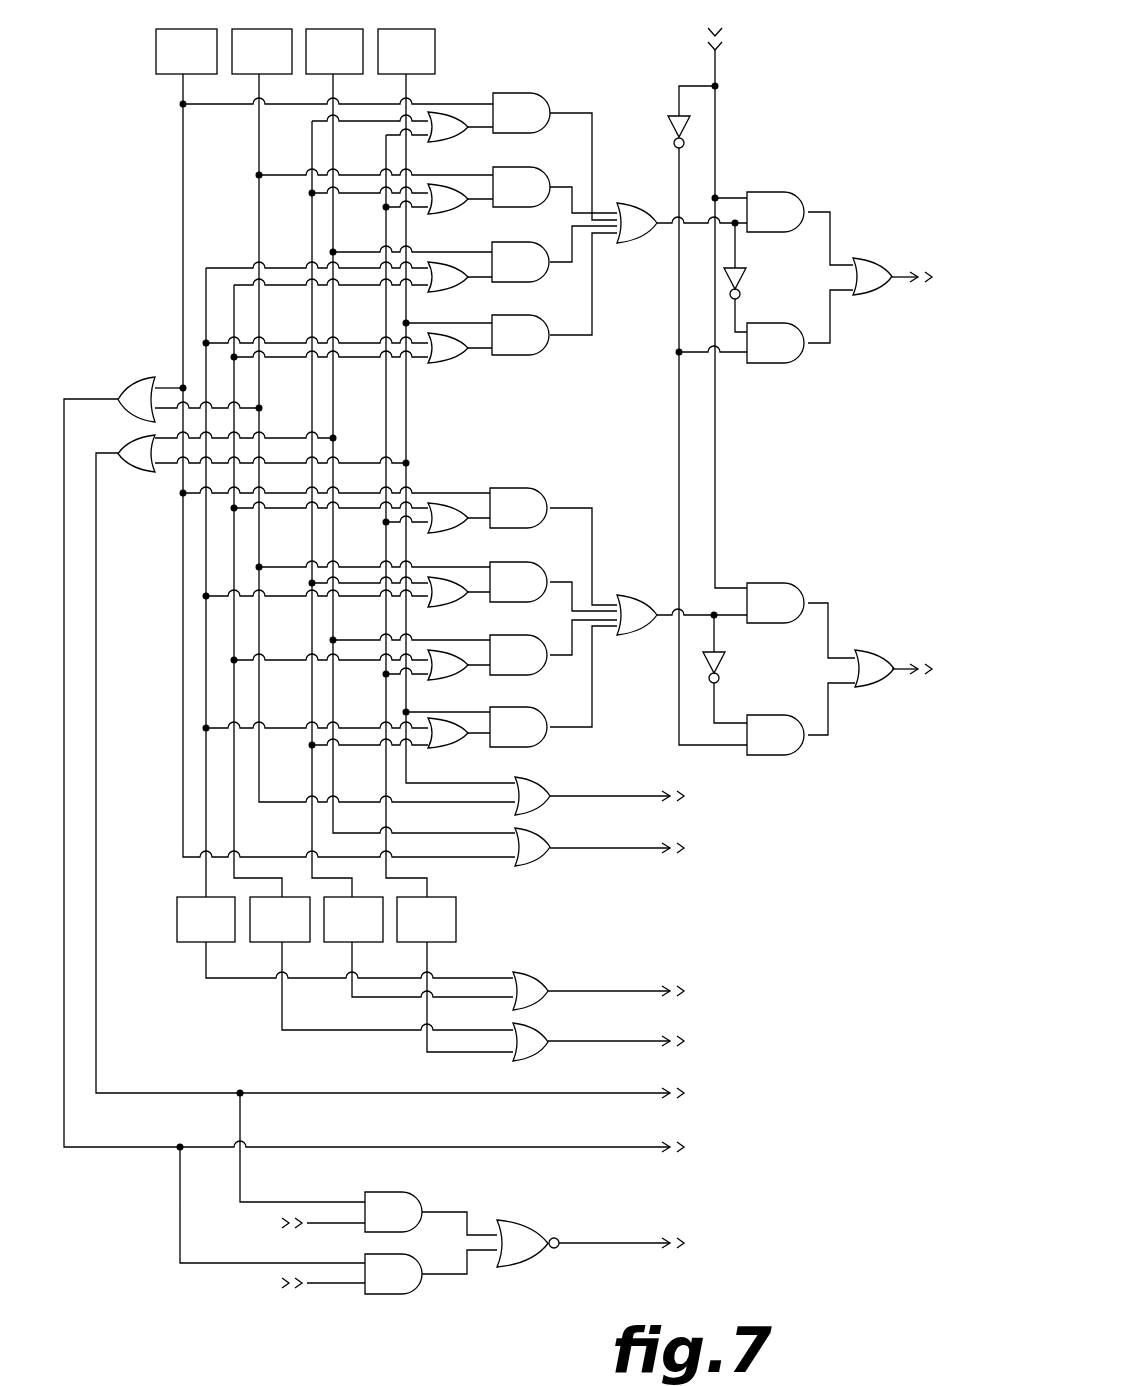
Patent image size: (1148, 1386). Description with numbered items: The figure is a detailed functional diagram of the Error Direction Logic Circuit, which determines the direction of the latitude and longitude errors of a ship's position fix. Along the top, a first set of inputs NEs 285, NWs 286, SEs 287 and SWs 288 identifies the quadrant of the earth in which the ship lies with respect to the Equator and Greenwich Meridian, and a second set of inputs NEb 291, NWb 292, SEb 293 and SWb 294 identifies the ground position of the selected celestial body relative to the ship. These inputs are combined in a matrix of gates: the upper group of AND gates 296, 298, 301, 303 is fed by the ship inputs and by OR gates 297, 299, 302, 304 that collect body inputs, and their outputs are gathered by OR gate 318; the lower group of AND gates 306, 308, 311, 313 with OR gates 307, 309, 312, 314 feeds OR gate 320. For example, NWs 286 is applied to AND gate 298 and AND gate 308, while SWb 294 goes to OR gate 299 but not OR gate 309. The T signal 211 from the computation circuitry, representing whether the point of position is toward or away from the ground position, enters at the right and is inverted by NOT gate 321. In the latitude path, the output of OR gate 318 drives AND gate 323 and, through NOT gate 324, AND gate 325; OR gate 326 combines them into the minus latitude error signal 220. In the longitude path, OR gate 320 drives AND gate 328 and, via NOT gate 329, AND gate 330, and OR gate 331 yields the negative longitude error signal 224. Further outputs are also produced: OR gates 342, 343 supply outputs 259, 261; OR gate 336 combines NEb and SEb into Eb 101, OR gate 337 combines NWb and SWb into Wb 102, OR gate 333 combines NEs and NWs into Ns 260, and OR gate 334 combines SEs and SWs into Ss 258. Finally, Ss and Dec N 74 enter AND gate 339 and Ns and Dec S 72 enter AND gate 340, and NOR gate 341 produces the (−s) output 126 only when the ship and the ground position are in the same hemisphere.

The NEs input 285 is at (178, 29).
The NWs input 286 is at (265, 29).
The SEs input 287 is at (330, 29).
The SWs input 288 is at (406, 29).
The NEb input 291 is at (186, 942).
The NWb input 292 is at (262, 942).
The SEb input 293 is at (337, 942).
The SWb input 294 is at (412, 942).
The AND gate 296 is at (530, 93).
The OR gate 297 is at (437, 142).
The AND gate 298 is at (520, 167).
The OR gate 299 is at (437, 214).
The AND gate 301 is at (525, 242).
The OR gate 302 is at (437, 292).
The AND gate 303 is at (530, 315).
The OR gate 304 is at (437, 363).
The AND gate 306 is at (530, 488).
The OR gate 307 is at (437, 533).
The AND gate 308 is at (525, 562).
The OR gate 309 is at (437, 607).
The AND gate 311 is at (522, 635).
The OR gate 312 is at (437, 680).
The AND gate 313 is at (530, 707).
The OR gate 314 is at (437, 748).
The OR gate 318 is at (646, 243).
The OR gate 320 is at (653, 595).
The NOT gate 321 is at (673, 132).
The AND gate 323 is at (785, 192).
The NOT gate 324 is at (745, 282).
The AND gate 325 is at (781, 363).
The OR gate 326 is at (874, 295).
The AND gate 328 is at (775, 580).
The NOT gate 329 is at (721, 671).
The AND gate 330 is at (776, 755).
The OR gate 331 is at (885, 683).
The OR gate 333 is at (130, 386).
The OR gate 334 is at (128, 472).
The OR gate 336 is at (538, 972).
The OR gate 337 is at (540, 1026).
The AND gate 339 is at (400, 1191).
The AND gate 340 is at (404, 1294).
The NOR gate 341 is at (520, 1220).
The OR gate 342 is at (545, 805).
The OR gate 343 is at (543, 860).
The T signal 211 is at (715, 52).
The minus latitude error signal 220 is at (915, 270).
The negative longitude error signal 224 is at (916, 662).
The Ws output signal 259 is at (591, 794).
The Es output signal 261 is at (597, 846).
The Eb output 101 is at (600, 990).
The Wb output 102 is at (597, 1040).
The Ss output 258 is at (592, 1092).
The Ns output 260 is at (592, 1146).
The (−s) output 126 is at (590, 1243).
The Dec N input 74 is at (345, 1225).
The Dec S input 72 is at (320, 1286).